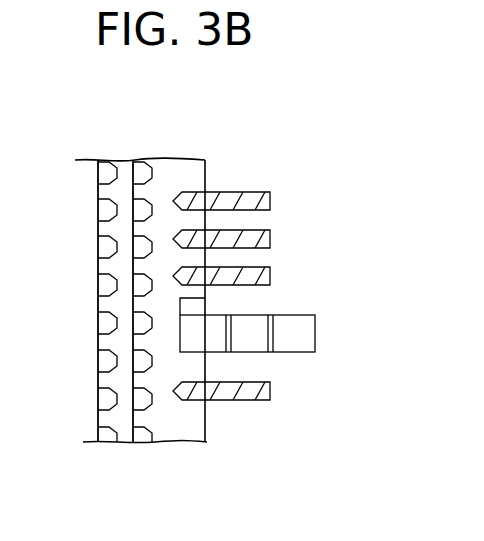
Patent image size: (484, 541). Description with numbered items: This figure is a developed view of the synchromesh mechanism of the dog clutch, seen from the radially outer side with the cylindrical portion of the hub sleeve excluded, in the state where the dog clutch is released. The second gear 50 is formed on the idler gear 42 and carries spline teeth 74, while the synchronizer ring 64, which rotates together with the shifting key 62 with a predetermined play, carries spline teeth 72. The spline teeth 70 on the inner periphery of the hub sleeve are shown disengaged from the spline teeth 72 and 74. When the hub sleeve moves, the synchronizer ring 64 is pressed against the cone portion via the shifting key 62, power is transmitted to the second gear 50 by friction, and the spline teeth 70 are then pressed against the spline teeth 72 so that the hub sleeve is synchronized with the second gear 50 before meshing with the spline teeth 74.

The idler gear 42 is at (92, 428).
The second gear 50 is at (127, 428).
The shifting key 62 is at (302, 332).
The synchronizer ring 64 is at (165, 425).
The spline teeth 70 is at (258, 238).
The spline teeth 72 is at (142, 170).
The spline teeth 74 is at (108, 170).